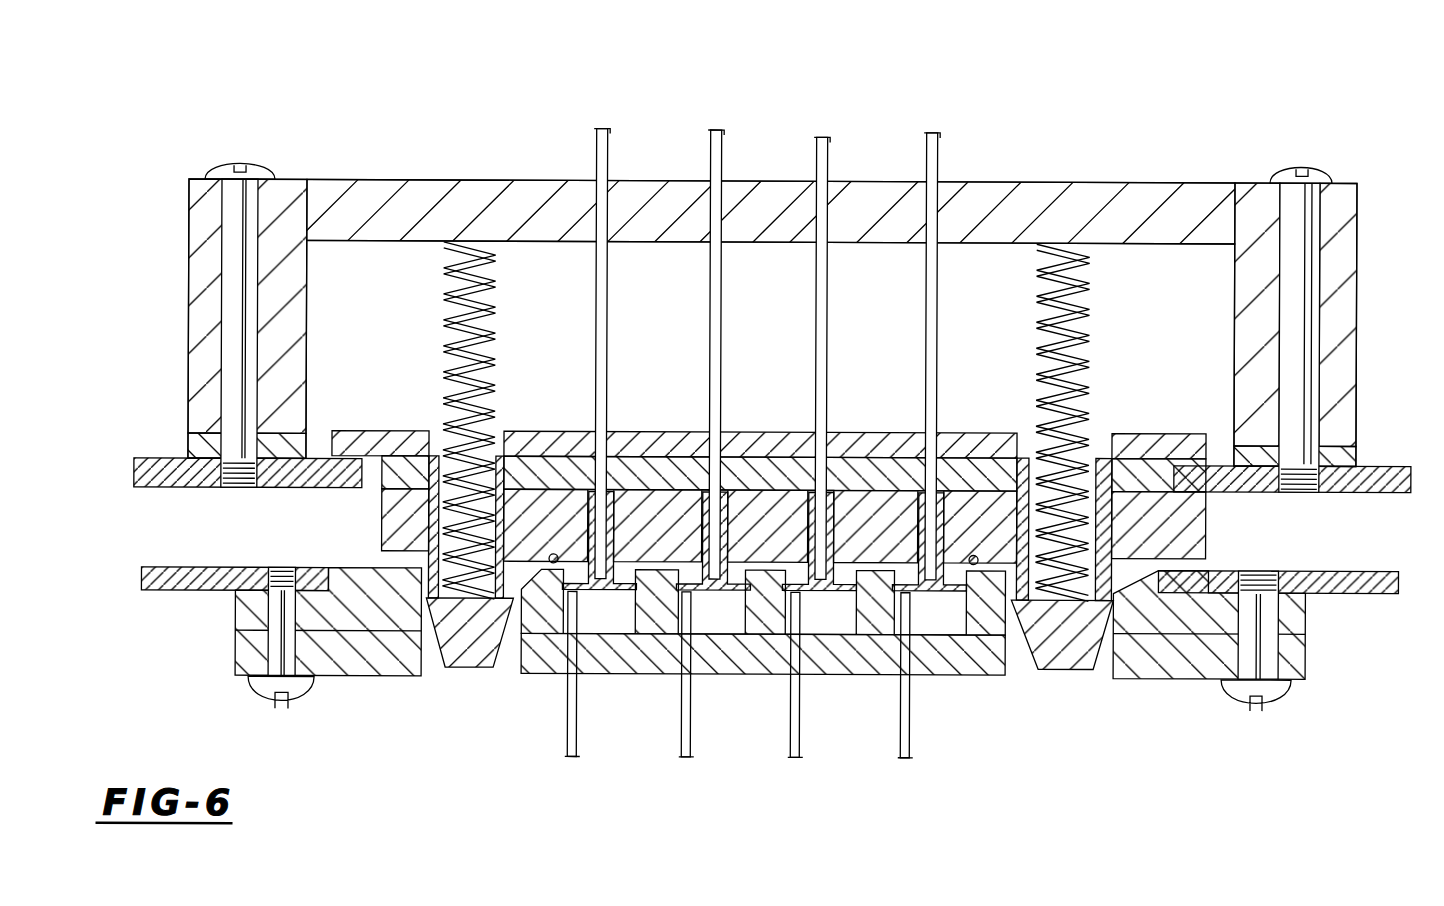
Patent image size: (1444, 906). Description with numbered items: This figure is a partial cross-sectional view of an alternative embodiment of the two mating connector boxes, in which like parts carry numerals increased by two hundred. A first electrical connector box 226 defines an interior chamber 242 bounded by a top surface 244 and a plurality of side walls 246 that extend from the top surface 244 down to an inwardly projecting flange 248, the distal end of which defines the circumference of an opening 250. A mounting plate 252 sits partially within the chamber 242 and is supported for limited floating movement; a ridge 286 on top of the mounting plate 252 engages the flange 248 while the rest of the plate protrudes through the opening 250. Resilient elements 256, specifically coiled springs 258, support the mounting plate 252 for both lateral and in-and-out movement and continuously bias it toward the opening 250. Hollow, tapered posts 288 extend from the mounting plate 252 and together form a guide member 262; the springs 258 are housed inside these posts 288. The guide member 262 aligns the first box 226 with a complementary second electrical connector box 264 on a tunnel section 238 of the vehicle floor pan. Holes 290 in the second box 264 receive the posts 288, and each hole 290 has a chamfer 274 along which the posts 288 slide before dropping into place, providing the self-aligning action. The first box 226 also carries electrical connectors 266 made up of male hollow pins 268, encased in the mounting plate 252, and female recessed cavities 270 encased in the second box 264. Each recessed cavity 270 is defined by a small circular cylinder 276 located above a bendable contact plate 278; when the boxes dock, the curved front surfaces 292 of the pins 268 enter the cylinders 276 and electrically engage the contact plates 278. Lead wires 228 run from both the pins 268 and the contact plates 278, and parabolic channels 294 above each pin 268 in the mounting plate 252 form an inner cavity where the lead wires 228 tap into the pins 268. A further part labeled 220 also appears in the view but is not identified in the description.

The upper circuit board 220 is at (1375, 462).
The first electrical connector box 226 is at (1242, 225).
The lead wire 228 is at (718, 132).
The tunnel section 238 is at (1367, 590).
The interior chamber 242 is at (672, 320).
The top surface 244 is at (402, 245).
The side walls 246 is at (318, 282).
The inwardly projecting flange 248 is at (323, 488).
The opening 250 is at (1168, 478).
The mounting plate 252 is at (898, 533).
The resilient elements 256 is at (1128, 288).
The coiled springs 258 is at (500, 290).
The guide member 262 is at (437, 695).
The second electrical connector box 264 is at (1205, 618).
The electrical connectors 266 is at (624, 559).
The hollow pins 268 is at (830, 492).
The recessed cavities 270 is at (715, 610).
The chamfer 274 is at (390, 560).
The circular cylinder 276 is at (920, 640).
The bendable contact plate 278 is at (603, 660).
The ridge 286 is at (357, 430).
The hollow posts 288 is at (467, 655).
The holes 290 is at (432, 660).
The curved front surfaces 292 is at (860, 600).
The parabolic channels 294 is at (592, 488).